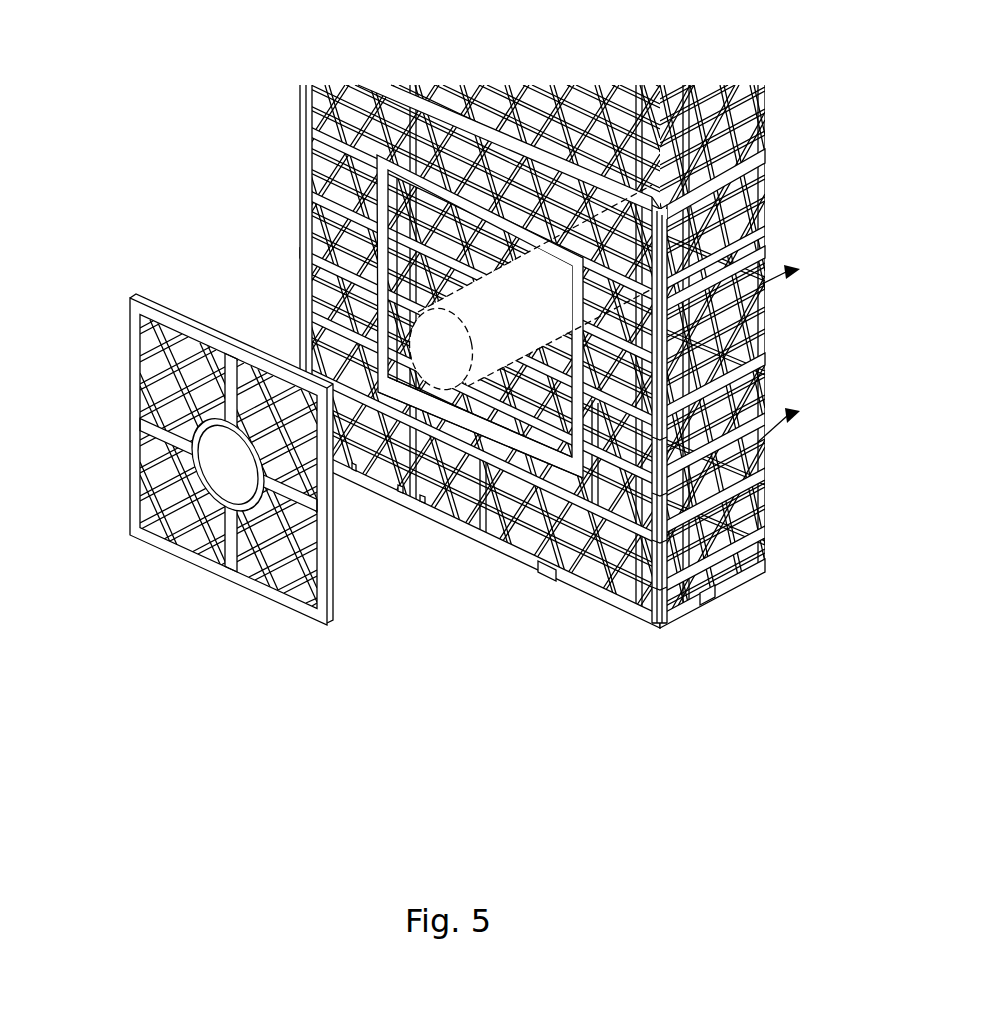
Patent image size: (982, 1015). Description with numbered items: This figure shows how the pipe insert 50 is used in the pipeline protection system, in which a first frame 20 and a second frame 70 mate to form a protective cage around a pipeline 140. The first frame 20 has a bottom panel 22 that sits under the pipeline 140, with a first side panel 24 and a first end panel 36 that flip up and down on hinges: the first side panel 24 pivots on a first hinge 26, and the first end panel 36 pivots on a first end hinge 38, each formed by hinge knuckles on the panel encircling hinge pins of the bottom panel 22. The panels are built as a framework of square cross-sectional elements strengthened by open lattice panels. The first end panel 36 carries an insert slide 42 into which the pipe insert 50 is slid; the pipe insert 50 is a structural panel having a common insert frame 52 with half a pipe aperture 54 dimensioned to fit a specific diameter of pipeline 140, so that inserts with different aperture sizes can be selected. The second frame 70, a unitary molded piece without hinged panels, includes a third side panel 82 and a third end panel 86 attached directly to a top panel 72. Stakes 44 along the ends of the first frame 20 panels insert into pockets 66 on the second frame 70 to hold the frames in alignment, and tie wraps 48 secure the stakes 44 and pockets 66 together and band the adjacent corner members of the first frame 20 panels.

The first frame 20 is at (545, 374).
The bottom panel 22 is at (640, 616).
The first side panel 24 is at (761, 563).
The first hinge 26 is at (713, 596).
The first end panel 36 is at (302, 261).
The first end hinge 38 is at (543, 570).
The insert slide 42 is at (497, 445).
The stake 44 is at (760, 361).
The tie wrap 48 is at (663, 584).
The pipe insert 50 is at (216, 482).
The insert frame 52 is at (133, 360).
The pipe aperture 54 is at (206, 476).
The pocket 66 is at (762, 376).
The second frame 70 is at (757, 367).
The top panel 72 is at (741, 148).
The third side panel 82 is at (750, 261).
The third end panel 86 is at (399, 343).
The pipeline 140 is at (437, 388).